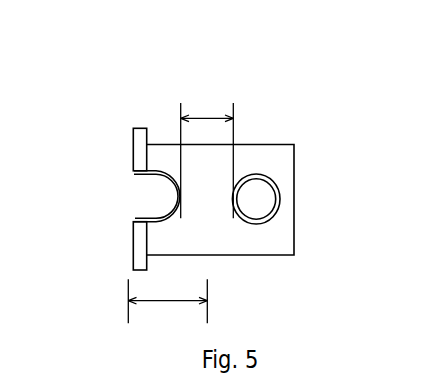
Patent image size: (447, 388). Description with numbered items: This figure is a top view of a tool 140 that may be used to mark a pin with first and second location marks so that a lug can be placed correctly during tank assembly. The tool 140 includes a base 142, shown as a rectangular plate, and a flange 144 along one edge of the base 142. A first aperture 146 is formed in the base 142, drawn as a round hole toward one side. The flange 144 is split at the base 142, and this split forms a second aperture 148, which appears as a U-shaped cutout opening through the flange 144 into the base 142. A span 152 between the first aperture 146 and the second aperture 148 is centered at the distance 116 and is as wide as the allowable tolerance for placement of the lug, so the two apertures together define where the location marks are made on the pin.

The tool 140 is at (240, 38).
The base 142 is at (257, 239).
The flange 144 is at (133, 147).
The first aperture 146 is at (278, 184).
The second aperture 148 is at (170, 208).
The span 152 is at (207, 151).
The distance 116 is at (167, 307).